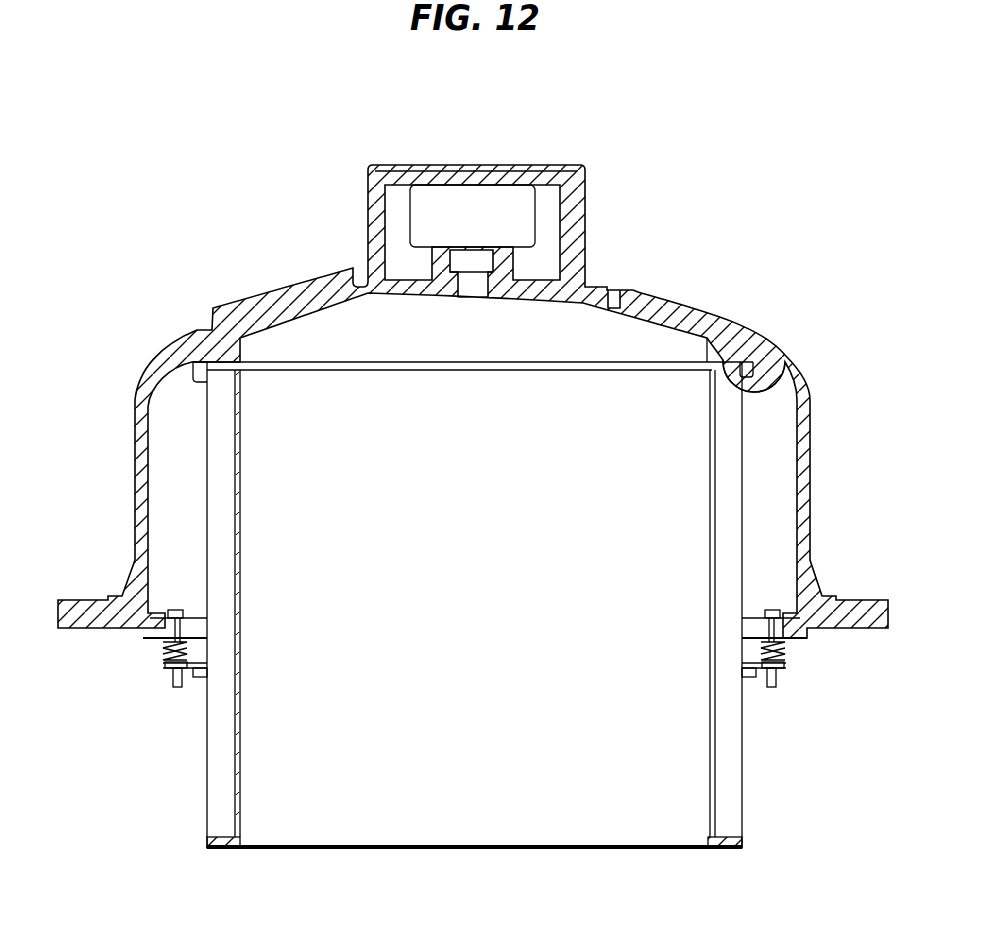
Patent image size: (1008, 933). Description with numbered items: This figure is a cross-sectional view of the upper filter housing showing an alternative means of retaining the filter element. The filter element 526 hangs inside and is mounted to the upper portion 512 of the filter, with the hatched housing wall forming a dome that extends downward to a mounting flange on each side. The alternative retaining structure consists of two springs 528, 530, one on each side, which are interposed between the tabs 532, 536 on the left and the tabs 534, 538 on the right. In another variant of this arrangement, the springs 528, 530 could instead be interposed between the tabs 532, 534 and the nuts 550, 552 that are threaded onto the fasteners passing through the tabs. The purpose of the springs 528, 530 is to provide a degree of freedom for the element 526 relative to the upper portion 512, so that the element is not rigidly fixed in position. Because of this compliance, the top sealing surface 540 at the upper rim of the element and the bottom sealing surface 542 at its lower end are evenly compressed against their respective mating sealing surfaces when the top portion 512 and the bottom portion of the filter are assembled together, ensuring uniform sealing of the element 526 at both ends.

The upper portion of the filter 512 is at (115, 325).
The filter element 526 is at (197, 805).
The spring 528 is at (163, 650).
The spring 530 is at (785, 652).
The tab 532 is at (163, 665).
The tab 534 is at (750, 672).
The tab 536 is at (150, 640).
The tab 538 is at (797, 638).
The top sealing surface 540 is at (787, 363).
The bottom sealing surface 542 is at (720, 850).
The nut 550 is at (190, 680).
The nut 552 is at (787, 677).